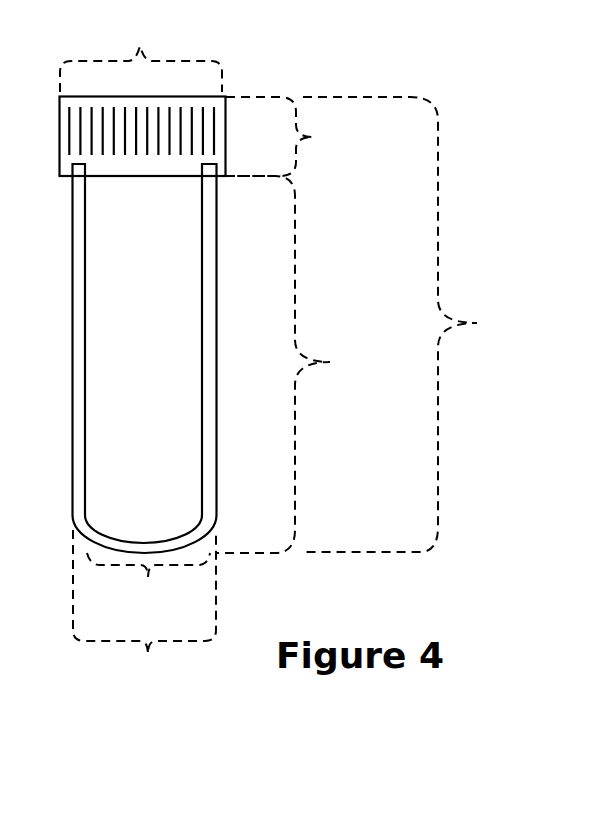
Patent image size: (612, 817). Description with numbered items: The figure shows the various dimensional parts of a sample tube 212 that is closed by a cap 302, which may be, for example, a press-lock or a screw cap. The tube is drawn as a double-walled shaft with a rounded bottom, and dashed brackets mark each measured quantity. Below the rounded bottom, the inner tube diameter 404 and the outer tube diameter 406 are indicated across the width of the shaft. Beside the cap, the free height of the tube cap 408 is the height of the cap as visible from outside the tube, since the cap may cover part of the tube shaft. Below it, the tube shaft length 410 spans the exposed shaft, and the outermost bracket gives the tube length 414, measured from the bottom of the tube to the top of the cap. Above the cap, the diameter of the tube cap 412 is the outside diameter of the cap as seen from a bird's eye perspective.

The sample tube 212 is at (53, 216).
The cap 302 is at (221, 95).
The inner tube diameter 404 is at (148, 585).
The outer tube diameter 406 is at (144, 612).
The free height of the tube cap 408 is at (299, 136).
The tube shaft length 410 is at (297, 364).
The diameter of the tube cap 412 is at (141, 54).
The tube length 414 is at (416, 324).